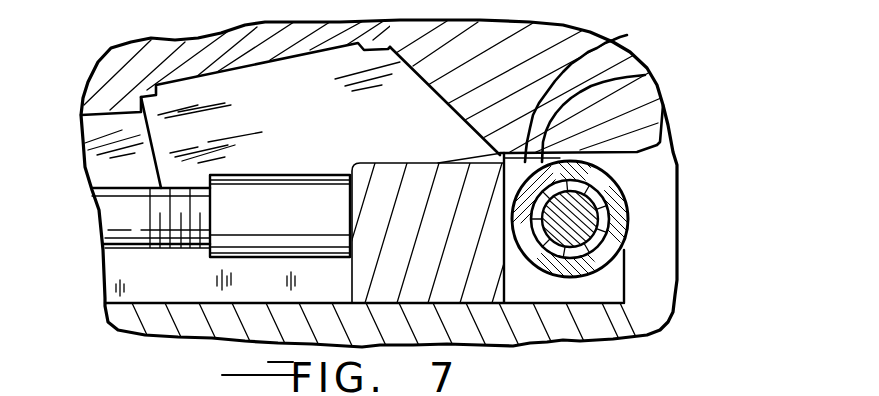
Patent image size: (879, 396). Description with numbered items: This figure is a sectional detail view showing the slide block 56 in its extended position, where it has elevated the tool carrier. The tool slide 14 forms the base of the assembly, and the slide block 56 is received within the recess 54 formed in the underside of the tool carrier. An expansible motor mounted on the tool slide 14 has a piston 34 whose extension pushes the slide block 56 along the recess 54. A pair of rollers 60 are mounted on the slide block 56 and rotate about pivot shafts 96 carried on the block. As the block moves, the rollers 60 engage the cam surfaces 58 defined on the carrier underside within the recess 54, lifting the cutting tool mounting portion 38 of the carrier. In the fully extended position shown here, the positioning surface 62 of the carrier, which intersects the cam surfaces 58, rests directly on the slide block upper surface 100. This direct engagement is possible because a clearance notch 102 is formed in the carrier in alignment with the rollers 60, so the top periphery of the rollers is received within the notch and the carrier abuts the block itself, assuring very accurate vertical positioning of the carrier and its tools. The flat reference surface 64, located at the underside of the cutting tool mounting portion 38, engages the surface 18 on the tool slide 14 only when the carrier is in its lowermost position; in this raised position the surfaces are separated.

The tool slide 14 is at (533, 330).
The surface on the tool slide 18 is at (590, 303).
The piston 34 is at (121, 233).
The cutting tool mounting portion 38 is at (643, 100).
The recess 54 is at (305, 111).
The slide block 56 is at (407, 180).
The cam surfaces 58 is at (443, 99).
The rollers 60 is at (626, 215).
The positioning surface 62 is at (624, 37).
The flat reference surface 64 is at (641, 149).
The pivot shafts 96 is at (582, 227).
The slide block upper surface 100 is at (377, 163).
The clearance notch 102 is at (647, 75).